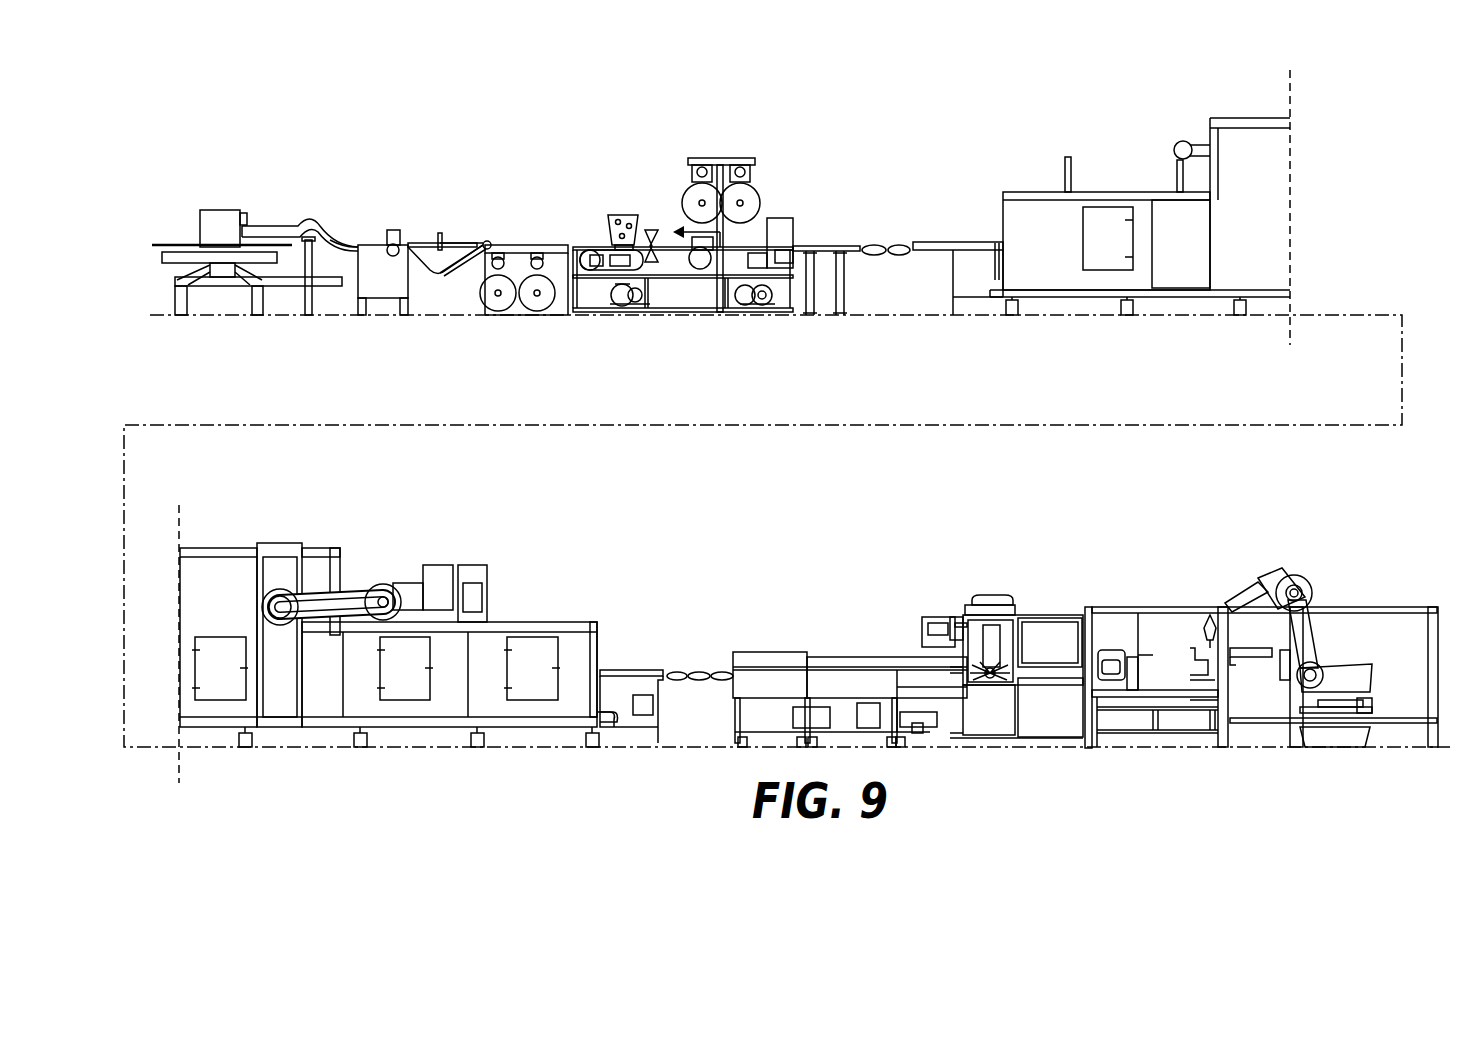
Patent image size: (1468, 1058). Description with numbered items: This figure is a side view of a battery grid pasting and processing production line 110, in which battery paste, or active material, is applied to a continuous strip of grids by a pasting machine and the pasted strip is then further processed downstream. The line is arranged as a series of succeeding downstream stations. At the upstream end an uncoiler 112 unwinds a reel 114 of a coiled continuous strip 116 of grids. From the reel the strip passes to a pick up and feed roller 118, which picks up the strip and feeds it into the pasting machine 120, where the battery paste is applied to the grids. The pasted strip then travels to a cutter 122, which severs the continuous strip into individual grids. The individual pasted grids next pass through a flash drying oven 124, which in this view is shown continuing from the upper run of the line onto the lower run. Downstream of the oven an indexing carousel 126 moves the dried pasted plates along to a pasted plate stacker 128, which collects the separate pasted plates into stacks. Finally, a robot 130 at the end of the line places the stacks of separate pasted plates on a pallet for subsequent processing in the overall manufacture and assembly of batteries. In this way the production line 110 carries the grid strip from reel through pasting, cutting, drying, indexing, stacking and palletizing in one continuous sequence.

The production line 110 is at (412, 90).
The uncoiler 112 is at (219, 190).
The reel 114 is at (166, 245).
The coiled continuous strip 116 is at (280, 228).
The pick up and feed roller 118 is at (378, 238).
The pasting machine 120 is at (622, 205).
The cutter 122 is at (784, 208).
The flash drying oven 124 is at (1109, 180).
The indexing carousel 126 is at (993, 580).
The pasted plate stacker 128 is at (1110, 635).
The robot 130 is at (1243, 572).